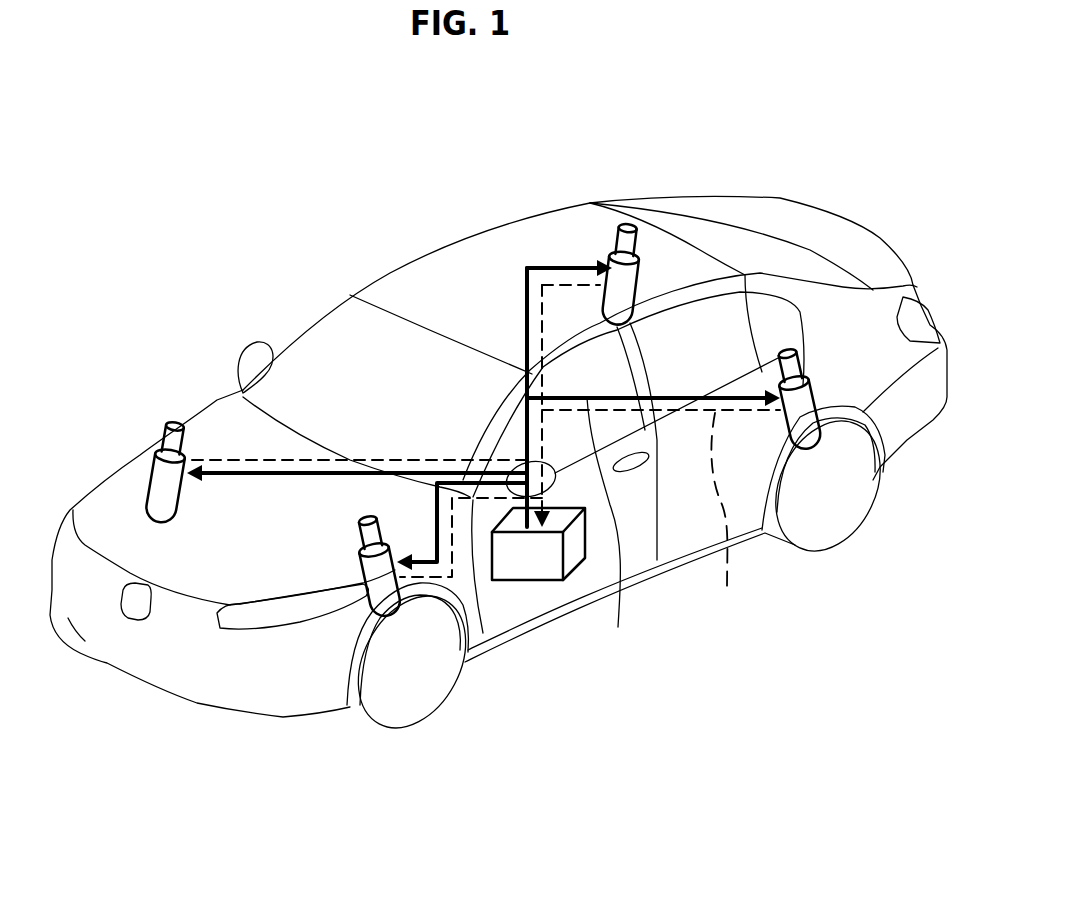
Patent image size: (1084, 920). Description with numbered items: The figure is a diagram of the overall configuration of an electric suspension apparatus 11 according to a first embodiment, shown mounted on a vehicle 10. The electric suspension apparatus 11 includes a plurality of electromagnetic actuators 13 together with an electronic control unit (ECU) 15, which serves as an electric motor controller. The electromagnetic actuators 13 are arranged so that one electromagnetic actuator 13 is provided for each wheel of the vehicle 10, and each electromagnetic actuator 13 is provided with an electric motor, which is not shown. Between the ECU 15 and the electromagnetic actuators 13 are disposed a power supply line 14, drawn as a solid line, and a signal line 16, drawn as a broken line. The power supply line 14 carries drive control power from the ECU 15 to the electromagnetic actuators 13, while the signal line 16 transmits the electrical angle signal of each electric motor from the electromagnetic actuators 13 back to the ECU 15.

The vehicle 10 is at (478, 230).
The electric suspension apparatus 11 is at (470, 430).
The electromagnetic actuator 13 is at (140, 485).
The power supply line 14 is at (612, 529).
The electronic control unit (ECU) 15 is at (522, 582).
The signal line 16 is at (726, 516).